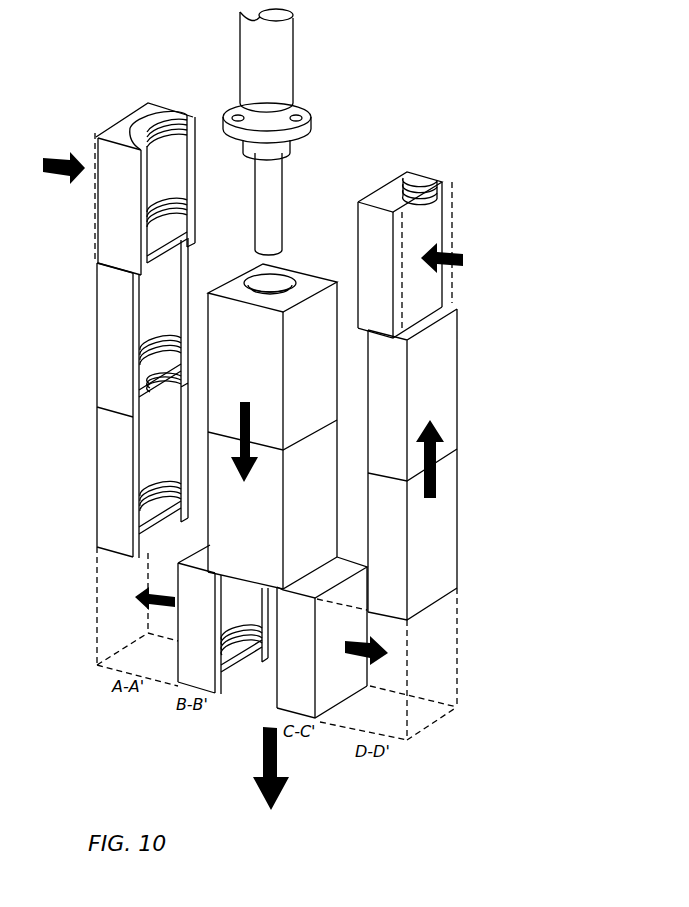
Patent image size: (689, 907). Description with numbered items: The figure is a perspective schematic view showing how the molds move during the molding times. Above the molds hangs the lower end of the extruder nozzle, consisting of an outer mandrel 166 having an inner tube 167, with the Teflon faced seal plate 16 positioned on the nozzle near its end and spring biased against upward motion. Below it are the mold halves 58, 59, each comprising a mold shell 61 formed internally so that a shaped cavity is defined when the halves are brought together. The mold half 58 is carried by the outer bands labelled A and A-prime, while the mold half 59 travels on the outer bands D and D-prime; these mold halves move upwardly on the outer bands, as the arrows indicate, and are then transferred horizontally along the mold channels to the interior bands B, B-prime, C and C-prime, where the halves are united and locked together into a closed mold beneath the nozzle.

The seal plate 16 is at (312, 118).
The mold half 58 is at (167, 99).
The mold half 59 is at (428, 164).
The mold shell 61 is at (287, 277).
The outer mandrel 166 is at (294, 38).
The inner tube 167 is at (281, 197).